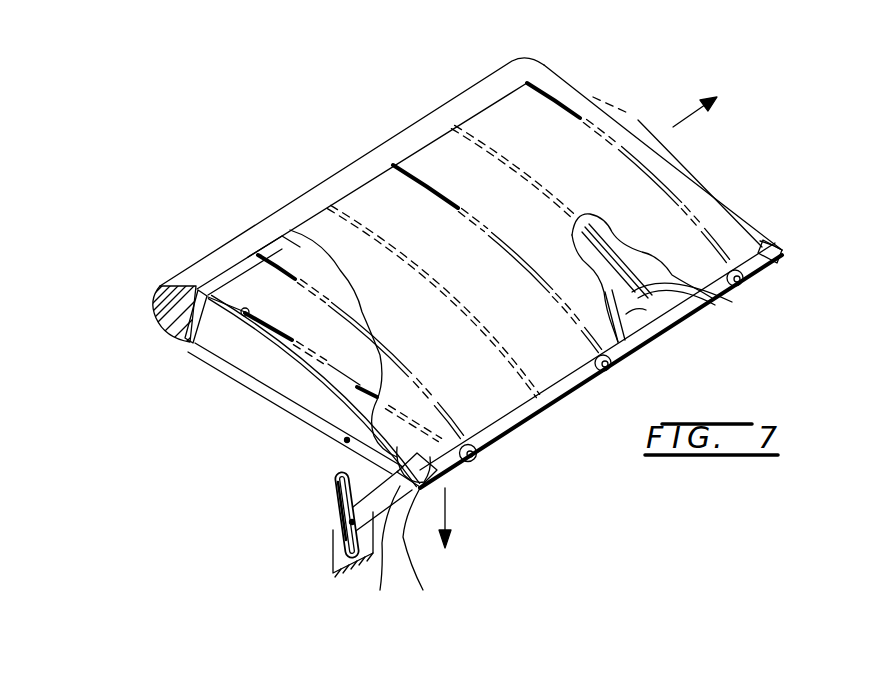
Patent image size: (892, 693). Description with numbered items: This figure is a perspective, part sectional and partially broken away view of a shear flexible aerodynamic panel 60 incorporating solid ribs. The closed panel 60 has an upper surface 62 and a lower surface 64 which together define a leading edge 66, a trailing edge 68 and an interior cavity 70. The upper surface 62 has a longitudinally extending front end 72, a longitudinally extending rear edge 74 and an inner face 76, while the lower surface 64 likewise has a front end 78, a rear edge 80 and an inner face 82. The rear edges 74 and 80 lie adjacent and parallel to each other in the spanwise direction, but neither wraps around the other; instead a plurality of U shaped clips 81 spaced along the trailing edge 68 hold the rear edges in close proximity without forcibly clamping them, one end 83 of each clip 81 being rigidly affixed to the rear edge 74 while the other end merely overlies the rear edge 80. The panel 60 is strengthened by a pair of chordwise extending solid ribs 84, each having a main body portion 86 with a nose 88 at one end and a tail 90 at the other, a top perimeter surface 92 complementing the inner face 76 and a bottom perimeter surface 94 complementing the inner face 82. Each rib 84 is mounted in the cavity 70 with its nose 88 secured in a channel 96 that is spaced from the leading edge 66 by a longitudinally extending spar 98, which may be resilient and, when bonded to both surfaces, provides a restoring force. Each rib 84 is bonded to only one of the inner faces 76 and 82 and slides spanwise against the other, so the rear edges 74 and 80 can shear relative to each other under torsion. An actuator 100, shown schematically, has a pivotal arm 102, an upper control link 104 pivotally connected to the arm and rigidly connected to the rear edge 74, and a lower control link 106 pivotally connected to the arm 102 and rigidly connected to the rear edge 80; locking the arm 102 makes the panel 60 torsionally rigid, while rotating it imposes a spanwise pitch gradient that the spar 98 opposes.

The closed flexible aerodynamic panel 60 is at (455, 65).
The upper surface 62 is at (552, 86).
The lower surface 64 is at (266, 395).
The leading edge 66 is at (152, 295).
The trailing edge 68 is at (463, 472).
The interior cavity 70 is at (650, 336).
The front end of upper surface 72 is at (178, 277).
The rear edge of upper surface 74 is at (453, 480).
The inner face of upper surface 76 is at (224, 358).
The front end of lower surface 78 is at (158, 323).
The rear edge of lower surface 80 is at (425, 578).
The U shaped clip 81 is at (480, 453).
The inner face of lower surface 82 is at (345, 441).
The end of clip 83 is at (483, 465).
The solid rib 84 is at (712, 306).
The main body portion 86 is at (328, 342).
The nose 88 is at (268, 287).
The tail 90 is at (683, 315).
The top perimeter surface 92 is at (713, 293).
The bottom perimeter surface 94 is at (627, 358).
The channel 96 is at (205, 350).
The spar 98 is at (185, 332).
The actuator 100 is at (337, 533).
The pivotal arm 102 is at (345, 520).
The upper control link 104 is at (340, 478).
The lower control link 106 is at (385, 577).